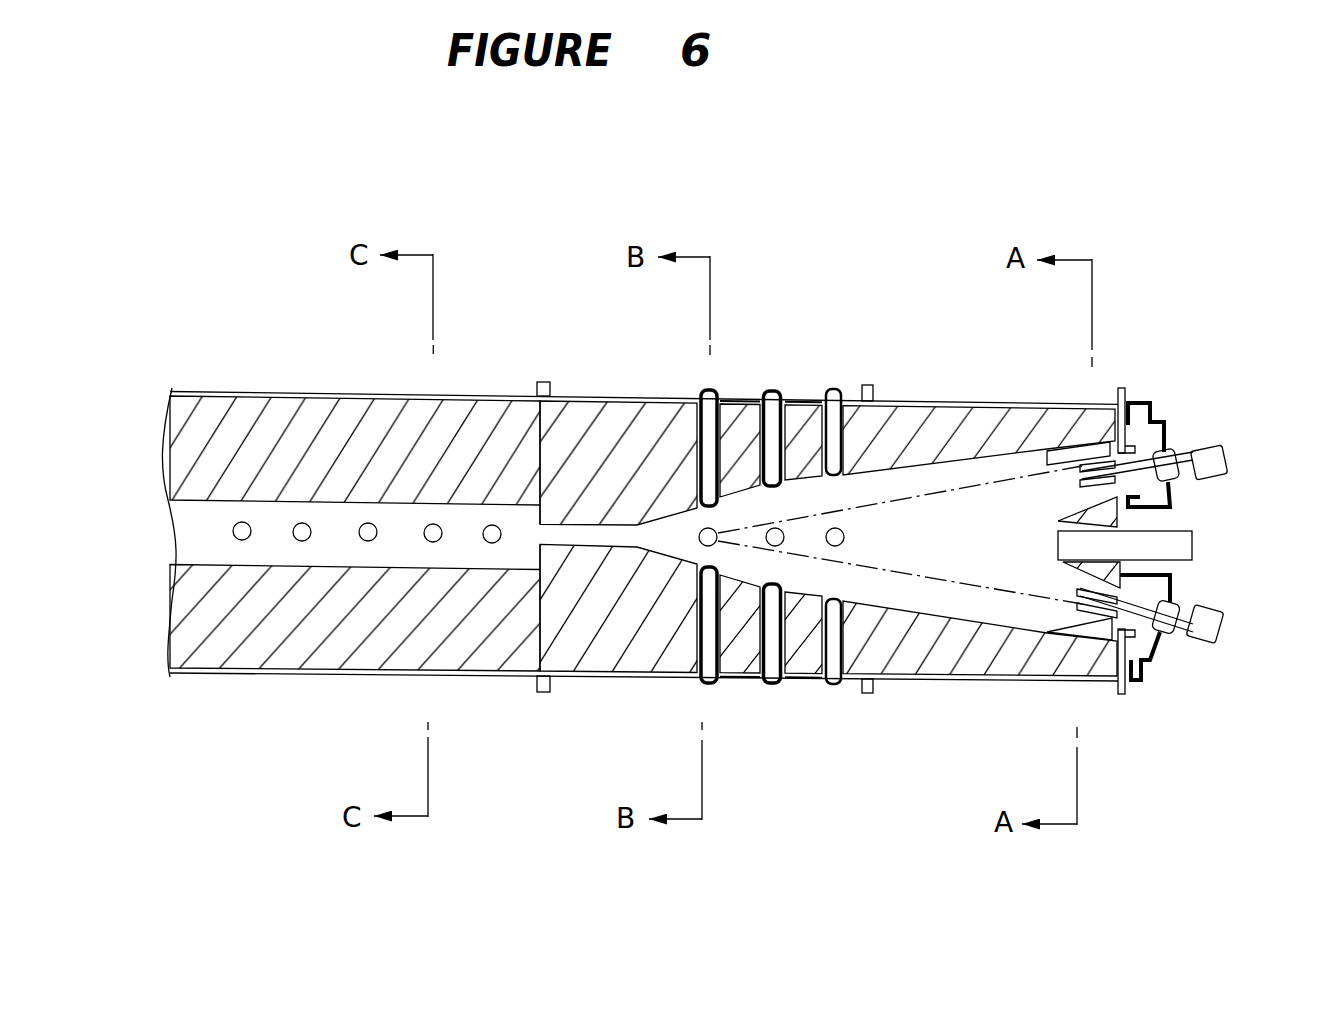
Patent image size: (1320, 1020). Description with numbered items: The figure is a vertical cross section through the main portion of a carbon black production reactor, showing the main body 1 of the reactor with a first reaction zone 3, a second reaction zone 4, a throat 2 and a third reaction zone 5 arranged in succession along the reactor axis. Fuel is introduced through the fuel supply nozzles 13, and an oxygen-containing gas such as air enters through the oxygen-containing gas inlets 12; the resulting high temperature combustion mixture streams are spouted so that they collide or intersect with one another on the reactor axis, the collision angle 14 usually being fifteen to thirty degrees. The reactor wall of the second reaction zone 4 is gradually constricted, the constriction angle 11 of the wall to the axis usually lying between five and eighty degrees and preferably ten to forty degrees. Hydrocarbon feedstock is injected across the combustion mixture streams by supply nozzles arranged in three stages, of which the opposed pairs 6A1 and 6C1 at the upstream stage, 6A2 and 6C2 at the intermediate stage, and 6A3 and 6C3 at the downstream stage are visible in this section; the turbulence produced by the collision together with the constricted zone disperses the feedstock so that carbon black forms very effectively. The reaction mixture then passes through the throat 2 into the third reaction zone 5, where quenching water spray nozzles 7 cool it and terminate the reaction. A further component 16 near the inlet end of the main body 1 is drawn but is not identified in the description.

The main body of the production reactor 1 is at (1002, 430).
The throat 2 is at (610, 530).
The first reaction zone 3 is at (1082, 183).
The second reaction zone 4 is at (873, 385).
The third reaction zone 5 is at (551, 382).
The hydrocarbon feedstock supply nozzle 6A3 is at (707, 392).
The hydrocarbon feedstock supply nozzle 6A2 is at (772, 388).
The hydrocarbon feedstock supply nozzle 6A1 is at (834, 388).
The hydrocarbon feedstock supply nozzle 6C3 is at (706, 686).
The hydrocarbon feedstock supply nozzle 6C2 is at (766, 688).
The hydrocarbon feedstock supply nozzle 6C1 is at (829, 688).
The quenching water spray nozzles 7 is at (485, 527).
The constriction angle 11 is at (733, 507).
The oxygen-containing gas inlets 12 is at (1138, 403).
The fuel supply nozzle 13 is at (1226, 458).
The collision angle 14 is at (805, 527).
The support rod 16 is at (1192, 545).